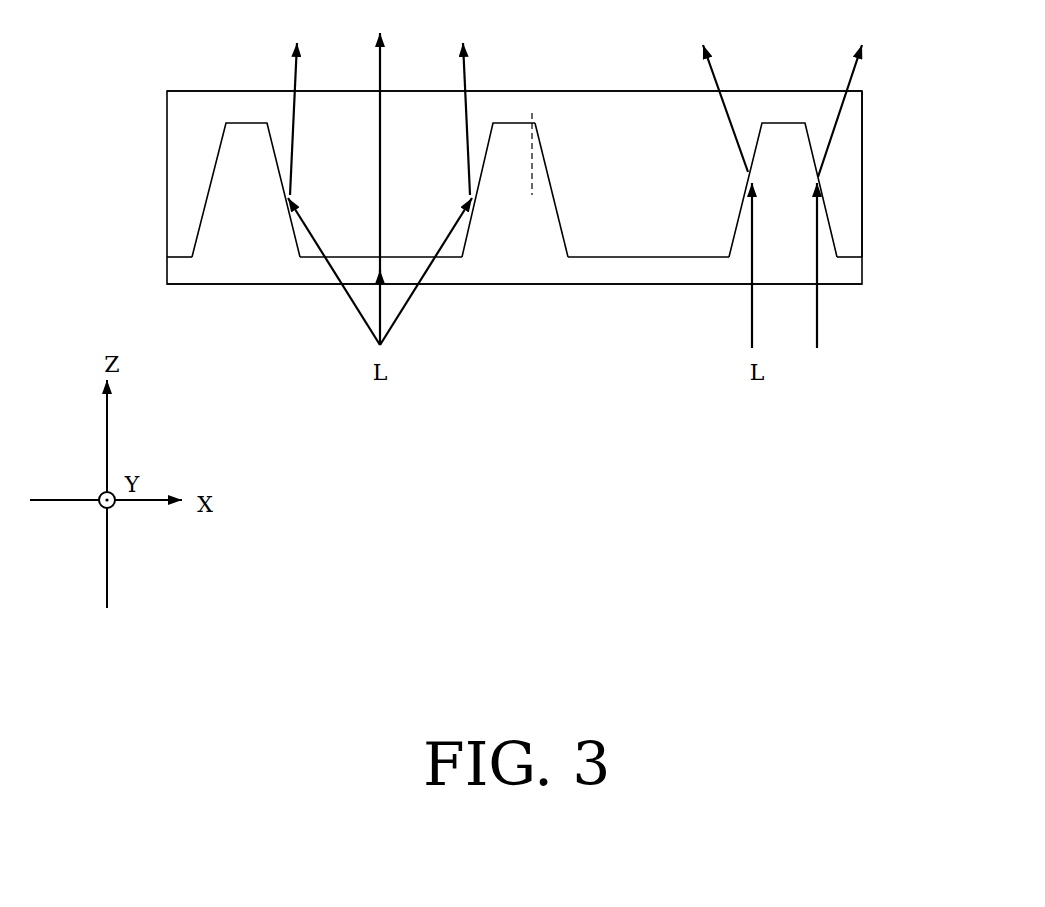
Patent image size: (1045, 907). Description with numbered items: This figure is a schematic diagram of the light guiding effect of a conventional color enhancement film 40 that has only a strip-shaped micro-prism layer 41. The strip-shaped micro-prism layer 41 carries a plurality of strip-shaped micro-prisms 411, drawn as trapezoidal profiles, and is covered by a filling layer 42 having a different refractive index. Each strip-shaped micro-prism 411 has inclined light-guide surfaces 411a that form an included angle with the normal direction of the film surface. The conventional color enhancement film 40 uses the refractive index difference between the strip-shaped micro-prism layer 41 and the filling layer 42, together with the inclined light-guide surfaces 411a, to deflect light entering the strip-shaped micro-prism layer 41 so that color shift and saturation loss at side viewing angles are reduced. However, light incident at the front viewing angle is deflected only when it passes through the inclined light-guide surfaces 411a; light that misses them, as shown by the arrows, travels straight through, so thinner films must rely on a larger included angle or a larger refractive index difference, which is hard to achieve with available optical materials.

The conventional color enhancement film 40 is at (124, 64).
The strip-shaped micro-prism layer 41 is at (847, 268).
The filling layer 42 is at (847, 122).
The strip-shaped micro-prism 411 is at (238, 140).
The inclined light-guide surface 411a is at (557, 203).